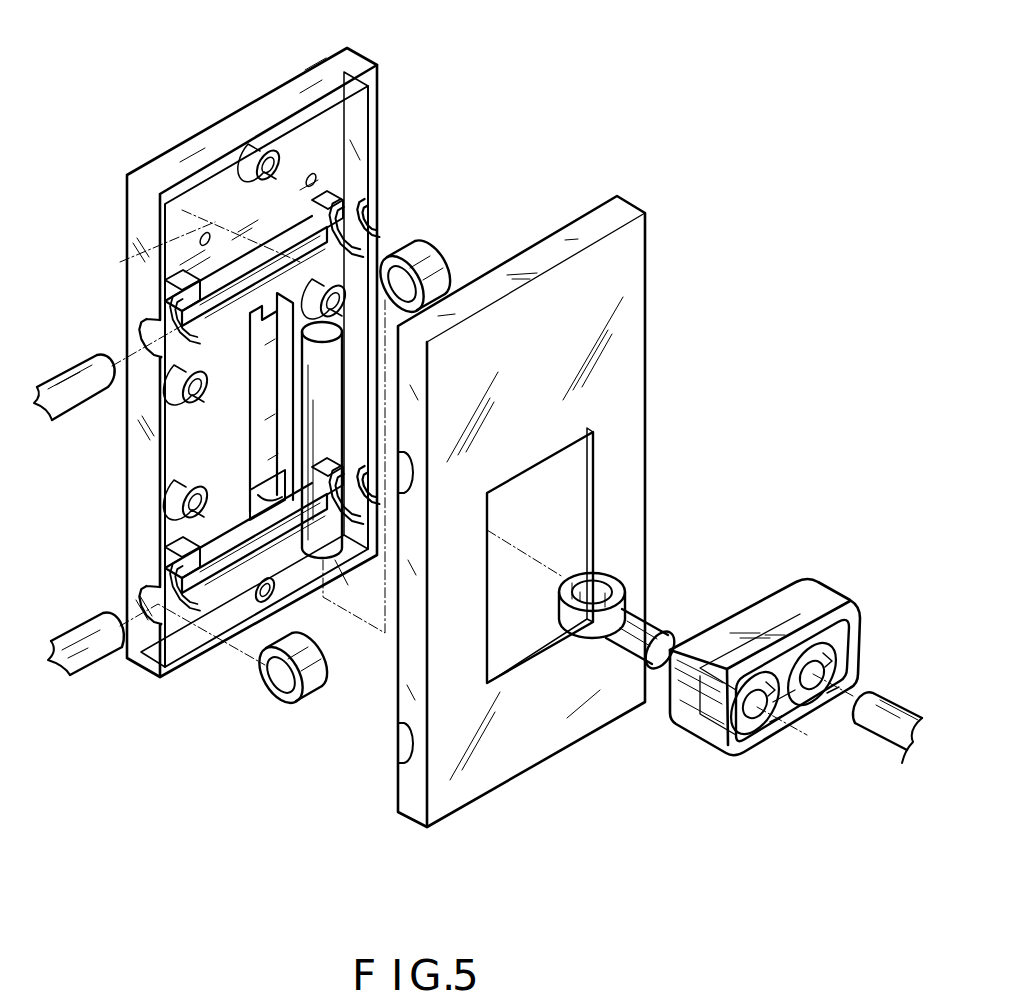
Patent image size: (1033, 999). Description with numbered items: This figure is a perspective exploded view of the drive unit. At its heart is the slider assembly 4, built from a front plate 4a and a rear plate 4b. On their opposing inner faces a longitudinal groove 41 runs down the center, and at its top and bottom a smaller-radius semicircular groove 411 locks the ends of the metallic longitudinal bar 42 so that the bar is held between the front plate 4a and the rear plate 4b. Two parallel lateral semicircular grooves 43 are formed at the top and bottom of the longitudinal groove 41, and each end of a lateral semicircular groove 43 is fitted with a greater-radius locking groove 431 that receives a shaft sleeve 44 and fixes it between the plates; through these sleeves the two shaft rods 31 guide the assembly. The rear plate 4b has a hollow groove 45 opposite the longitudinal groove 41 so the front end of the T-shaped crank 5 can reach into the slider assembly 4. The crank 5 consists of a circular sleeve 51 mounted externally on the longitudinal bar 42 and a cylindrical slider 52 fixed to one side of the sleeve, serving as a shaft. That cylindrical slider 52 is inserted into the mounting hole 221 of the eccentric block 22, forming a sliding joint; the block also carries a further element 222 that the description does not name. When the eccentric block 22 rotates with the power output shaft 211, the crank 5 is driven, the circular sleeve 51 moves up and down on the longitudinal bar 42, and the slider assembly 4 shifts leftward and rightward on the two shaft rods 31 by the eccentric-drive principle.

The slider assembly 4 is at (690, 137).
The front plate 4a is at (353, 63).
The rear plate 4b is at (620, 216).
The longitudinal groove 41 is at (232, 403).
The semicircular groove 411 is at (245, 470).
The longitudinal bar 42 is at (295, 335).
The lateral semicircular groove 43 is at (318, 366).
The locking groove 431 is at (352, 240).
The shaft sleeve 44 is at (437, 266).
The hollow groove 45 is at (552, 497).
The crank 5 is at (709, 497).
The circular sleeve 51 is at (603, 587).
The cylindrical slider 52 is at (645, 630).
The eccentric block 22 is at (807, 597).
The mounting hole 221 is at (768, 712).
The second clip ring 222 is at (832, 655).
The power output shaft 211 is at (880, 722).
The shaft rods 31 is at (77, 396).